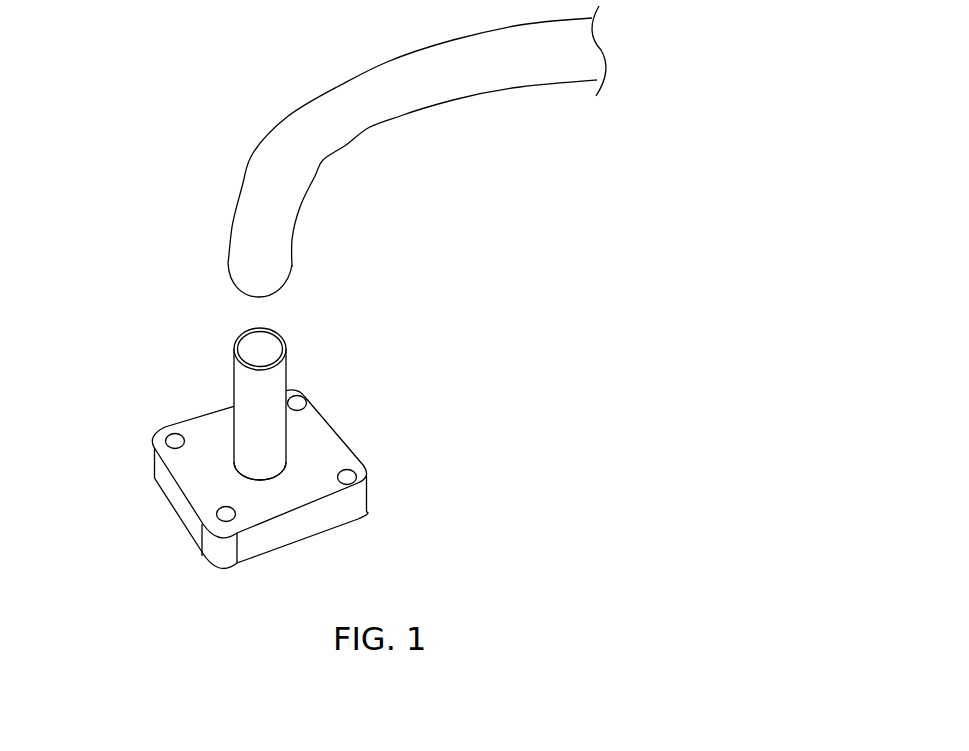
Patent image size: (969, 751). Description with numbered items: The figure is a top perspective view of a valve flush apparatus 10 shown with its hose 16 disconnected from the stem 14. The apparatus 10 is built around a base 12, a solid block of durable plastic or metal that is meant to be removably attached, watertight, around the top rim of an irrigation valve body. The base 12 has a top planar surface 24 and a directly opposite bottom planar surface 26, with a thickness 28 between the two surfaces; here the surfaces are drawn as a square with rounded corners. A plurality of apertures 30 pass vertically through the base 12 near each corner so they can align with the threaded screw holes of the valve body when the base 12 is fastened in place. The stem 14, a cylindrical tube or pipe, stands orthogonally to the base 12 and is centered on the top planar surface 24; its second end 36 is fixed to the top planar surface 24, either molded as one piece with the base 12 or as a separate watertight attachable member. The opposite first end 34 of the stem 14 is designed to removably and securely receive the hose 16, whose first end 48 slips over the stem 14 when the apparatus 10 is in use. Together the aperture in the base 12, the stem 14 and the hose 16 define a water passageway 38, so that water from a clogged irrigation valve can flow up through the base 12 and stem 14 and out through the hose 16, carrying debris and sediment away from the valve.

The valve flush apparatus 10 is at (107, 38).
The base 12 is at (234, 482).
The stem 14 is at (264, 390).
The hose 16 is at (417, 150).
The top planar surface 24 is at (318, 470).
The bottom planar surface 26 is at (273, 552).
The thickness 28 is at (185, 508).
The apertures 30 is at (165, 437).
The first end 34 is at (281, 333).
The second end 36 is at (262, 480).
The water passageway 38 is at (248, 359).
The first end of the hose 48 is at (260, 296).